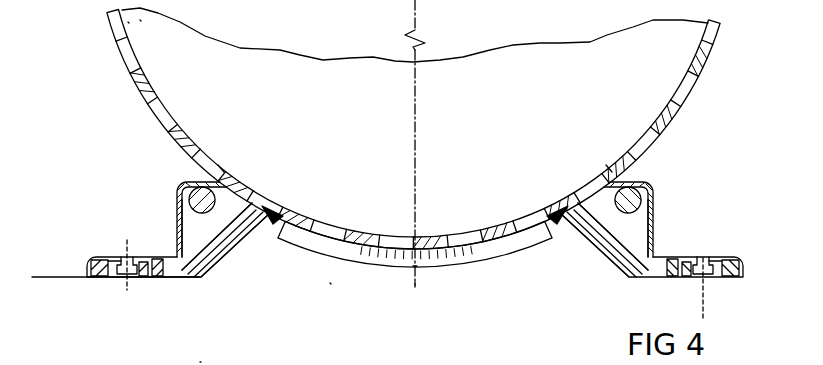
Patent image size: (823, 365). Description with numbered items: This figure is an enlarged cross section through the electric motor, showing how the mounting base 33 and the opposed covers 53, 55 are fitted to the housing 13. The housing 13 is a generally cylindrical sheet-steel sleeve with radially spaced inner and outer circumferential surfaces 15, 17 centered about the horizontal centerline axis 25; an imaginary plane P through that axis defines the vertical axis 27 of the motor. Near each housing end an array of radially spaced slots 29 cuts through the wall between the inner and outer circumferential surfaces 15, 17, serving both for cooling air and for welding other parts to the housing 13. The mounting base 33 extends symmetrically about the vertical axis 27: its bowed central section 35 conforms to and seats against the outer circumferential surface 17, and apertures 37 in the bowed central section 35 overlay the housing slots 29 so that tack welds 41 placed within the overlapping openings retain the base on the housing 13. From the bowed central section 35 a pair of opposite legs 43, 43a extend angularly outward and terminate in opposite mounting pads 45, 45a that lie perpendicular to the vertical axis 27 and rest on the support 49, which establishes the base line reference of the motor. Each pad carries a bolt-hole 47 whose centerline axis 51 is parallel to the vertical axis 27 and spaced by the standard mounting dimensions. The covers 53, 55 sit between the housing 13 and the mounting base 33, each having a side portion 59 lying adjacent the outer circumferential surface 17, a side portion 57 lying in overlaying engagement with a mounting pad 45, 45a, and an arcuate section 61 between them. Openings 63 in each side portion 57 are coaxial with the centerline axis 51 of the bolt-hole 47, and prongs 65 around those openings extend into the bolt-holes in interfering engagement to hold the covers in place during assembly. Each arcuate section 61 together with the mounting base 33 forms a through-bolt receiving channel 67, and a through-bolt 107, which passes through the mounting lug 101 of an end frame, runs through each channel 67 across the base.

The housing 13 is at (134, 43).
The inner circumferential surface 15 is at (146, 72).
The outer circumferential surface 17 is at (132, 80).
The horizontal centerline axis 25 is at (418, 2).
The vertical axis 27 is at (416, 282).
The slots 29 is at (148, 86).
The mounting base 33 is at (328, 284).
The bowed central section 35 is at (385, 263).
The apertures 37 is at (290, 246).
The tack welds 41 is at (268, 222).
The leg 43 is at (210, 238).
The leg 43a is at (620, 255).
The mounting pad 45 is at (99, 273).
The mounting pad 45a is at (667, 279).
The bolt-hole 47 is at (143, 277).
The support 49 is at (63, 277).
The centerline axis 51 is at (127, 290).
The cover 53 is at (163, 208).
The cover 55 is at (678, 171).
The side portion 57 is at (98, 257).
The side portion 59 is at (221, 168).
The arcuate section 61 is at (177, 186).
The openings 63 is at (118, 258).
The prongs 65 is at (143, 262).
The through-bolt receiving channel 67 is at (208, 236).
The through-bolt 107 is at (193, 188).
The mounting lug 101 is at (246, 355).
The plane P is at (415, 285).